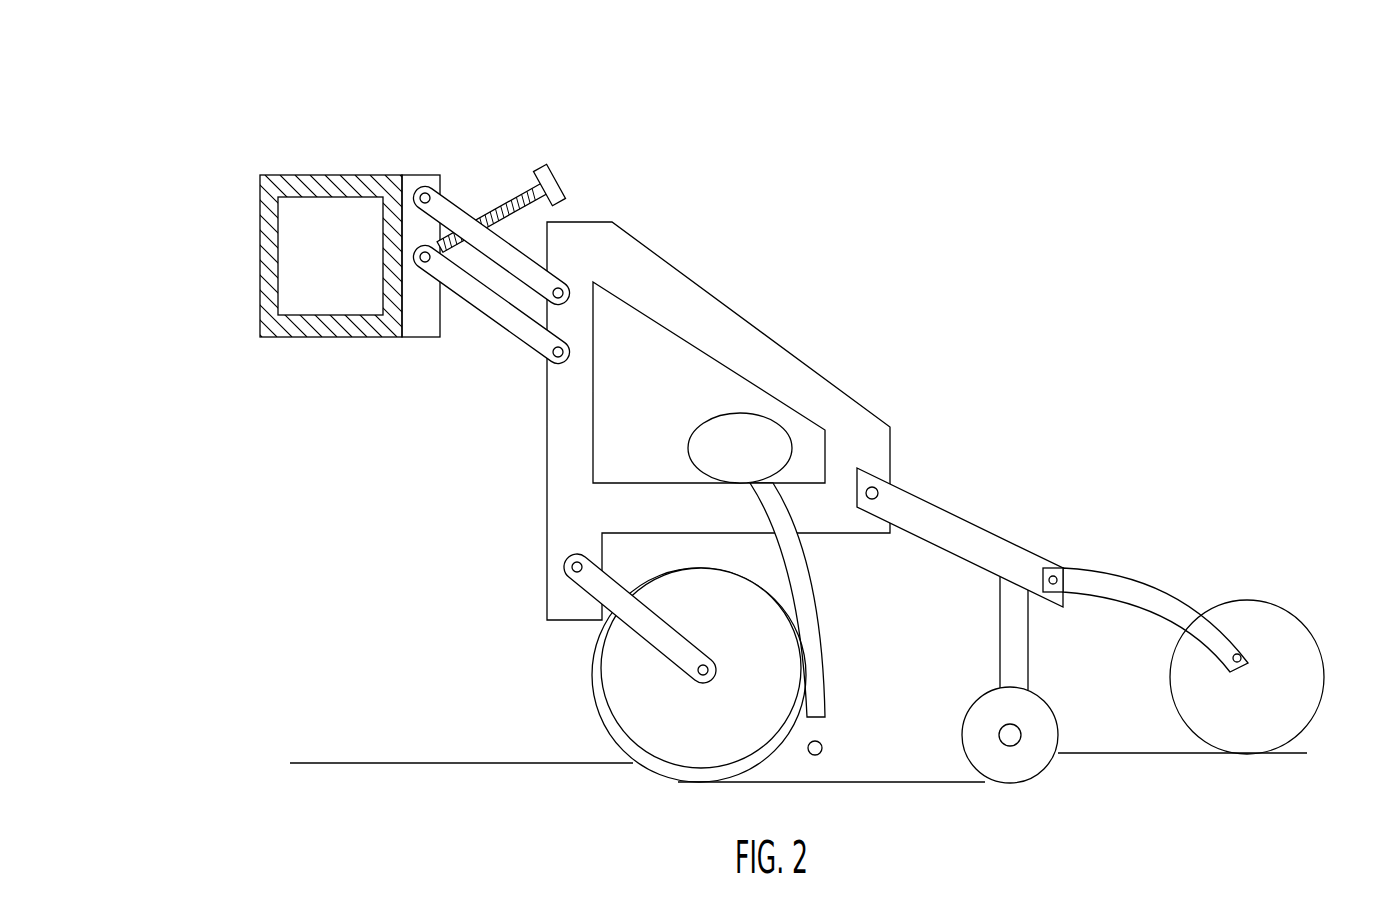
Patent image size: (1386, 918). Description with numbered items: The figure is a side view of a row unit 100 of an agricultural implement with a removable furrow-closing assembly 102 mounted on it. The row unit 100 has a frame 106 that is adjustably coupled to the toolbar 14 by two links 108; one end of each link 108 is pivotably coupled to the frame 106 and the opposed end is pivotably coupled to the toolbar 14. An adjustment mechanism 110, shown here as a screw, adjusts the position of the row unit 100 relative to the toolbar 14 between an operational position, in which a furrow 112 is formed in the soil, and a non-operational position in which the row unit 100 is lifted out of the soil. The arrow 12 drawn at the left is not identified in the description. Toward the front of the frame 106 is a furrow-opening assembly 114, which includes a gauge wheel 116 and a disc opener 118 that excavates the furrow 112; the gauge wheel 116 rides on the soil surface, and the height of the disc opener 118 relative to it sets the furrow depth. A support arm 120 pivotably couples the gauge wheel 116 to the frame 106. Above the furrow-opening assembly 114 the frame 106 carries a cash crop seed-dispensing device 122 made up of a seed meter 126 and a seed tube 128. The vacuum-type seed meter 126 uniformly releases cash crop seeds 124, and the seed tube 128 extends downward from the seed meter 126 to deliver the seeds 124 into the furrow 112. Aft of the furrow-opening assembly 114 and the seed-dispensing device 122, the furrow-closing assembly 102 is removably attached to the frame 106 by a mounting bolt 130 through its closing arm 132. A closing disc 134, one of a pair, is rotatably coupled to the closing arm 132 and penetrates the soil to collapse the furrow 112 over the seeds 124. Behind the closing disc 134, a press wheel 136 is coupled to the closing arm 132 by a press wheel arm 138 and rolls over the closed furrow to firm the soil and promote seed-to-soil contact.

The row unit 100 is at (200, 139).
The furrow-closing assembly 102 is at (1114, 481).
The frame 106 is at (727, 318).
The links 108 is at (452, 203).
The adjustment mechanism 110 is at (555, 180).
The furrow 112 is at (893, 766).
The furrow-opening assembly 114 is at (624, 697).
The gauge wheel 116 is at (595, 665).
The disc opener 118 is at (663, 777).
The support arm 120 is at (583, 593).
The cash crop seed-dispensing device 122 is at (759, 383).
The cash crop seeds 124 is at (822, 743).
The seed meter 126 is at (713, 420).
The seed tube 128 is at (818, 627).
The mounting bolt 130 is at (878, 488).
The closing arm 132 is at (970, 518).
The closing discs 134 is at (963, 705).
The press wheel 136 is at (1297, 615).
The press wheel arm 138 is at (1175, 592).
The direction of travel / ground 12 is at (172, 547).
The toolbar 14 is at (315, 338).